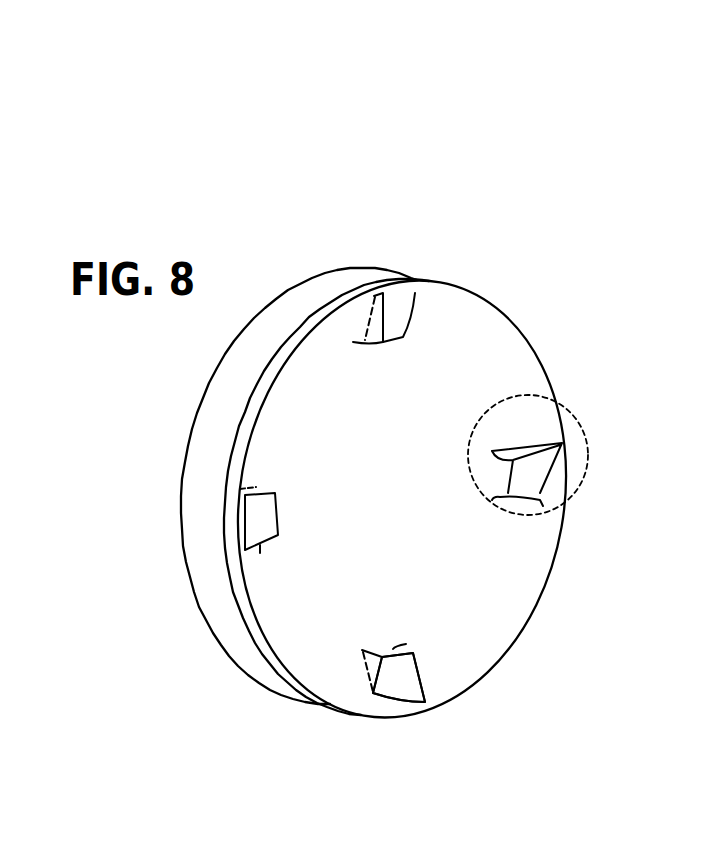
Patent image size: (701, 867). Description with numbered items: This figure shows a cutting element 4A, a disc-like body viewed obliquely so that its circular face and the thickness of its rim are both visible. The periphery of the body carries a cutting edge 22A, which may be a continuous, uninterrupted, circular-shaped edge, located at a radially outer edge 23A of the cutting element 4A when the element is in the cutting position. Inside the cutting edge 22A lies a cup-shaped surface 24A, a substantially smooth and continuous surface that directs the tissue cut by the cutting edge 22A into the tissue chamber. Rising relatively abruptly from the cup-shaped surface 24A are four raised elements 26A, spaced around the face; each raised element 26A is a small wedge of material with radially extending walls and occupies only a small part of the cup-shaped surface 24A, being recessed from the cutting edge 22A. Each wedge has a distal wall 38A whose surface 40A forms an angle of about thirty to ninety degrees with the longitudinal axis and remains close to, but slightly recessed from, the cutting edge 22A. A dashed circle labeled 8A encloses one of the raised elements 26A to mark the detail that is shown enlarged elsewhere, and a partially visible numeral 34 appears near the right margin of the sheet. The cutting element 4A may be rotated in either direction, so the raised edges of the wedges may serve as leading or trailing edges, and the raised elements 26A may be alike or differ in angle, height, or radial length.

The cutting element 4A is at (450, 182).
The detail view circle 8A is at (588, 463).
The cutting edge 22A is at (520, 638).
The radially outer edge 23A is at (343, 712).
The cup-shaped surface 24A is at (535, 556).
The raised element 26A is at (412, 685).
The component 34 is at (692, 353).
The distal wall 38A is at (267, 520).
The surface 40A is at (400, 318).